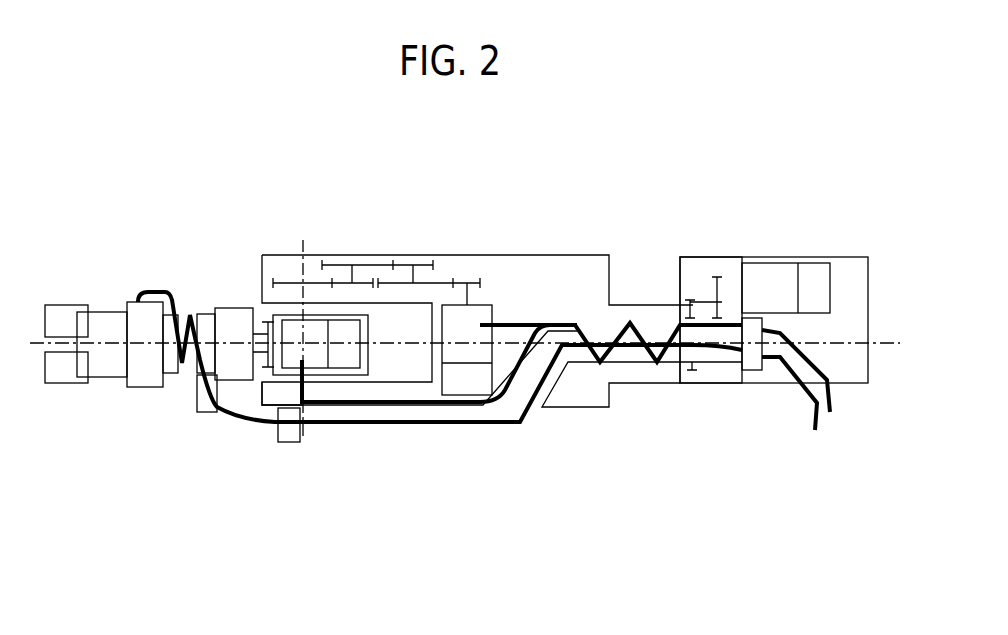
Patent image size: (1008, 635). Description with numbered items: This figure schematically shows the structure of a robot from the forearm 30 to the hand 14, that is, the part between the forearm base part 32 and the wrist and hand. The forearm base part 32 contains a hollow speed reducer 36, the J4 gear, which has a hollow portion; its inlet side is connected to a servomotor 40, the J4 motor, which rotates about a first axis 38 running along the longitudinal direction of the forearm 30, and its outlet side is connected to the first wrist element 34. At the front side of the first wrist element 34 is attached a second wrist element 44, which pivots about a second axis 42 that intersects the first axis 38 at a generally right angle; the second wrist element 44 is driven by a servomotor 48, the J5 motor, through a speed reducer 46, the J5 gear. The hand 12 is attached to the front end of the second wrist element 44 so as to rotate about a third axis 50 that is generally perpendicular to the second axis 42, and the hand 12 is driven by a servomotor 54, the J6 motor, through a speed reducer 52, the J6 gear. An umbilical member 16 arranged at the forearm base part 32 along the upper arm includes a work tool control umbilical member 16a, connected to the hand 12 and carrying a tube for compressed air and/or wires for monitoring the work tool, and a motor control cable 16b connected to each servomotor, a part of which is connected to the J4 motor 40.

The hand 12 is at (102, 312).
The hand 14 is at (63, 305).
The umbilical member 16 is at (819, 466).
The work tool control umbilical member 16a is at (812, 420).
The motor control cable 16b is at (835, 400).
The forearm 30 is at (662, 248).
The forearm base part 32 is at (695, 257).
The first wrist element 34 is at (583, 255).
The hollow speed reducer 36 is at (717, 277).
The first axis 38 is at (897, 343).
The servomotor 40 is at (780, 277).
The second axis 42 is at (300, 240).
The second wrist element 44 is at (233, 308).
The speed reducer 46 is at (370, 258).
The servomotor 48 is at (488, 305).
The third axis 50 is at (45, 352).
The speed reducer 52 is at (250, 388).
The servomotor 54 is at (318, 358).